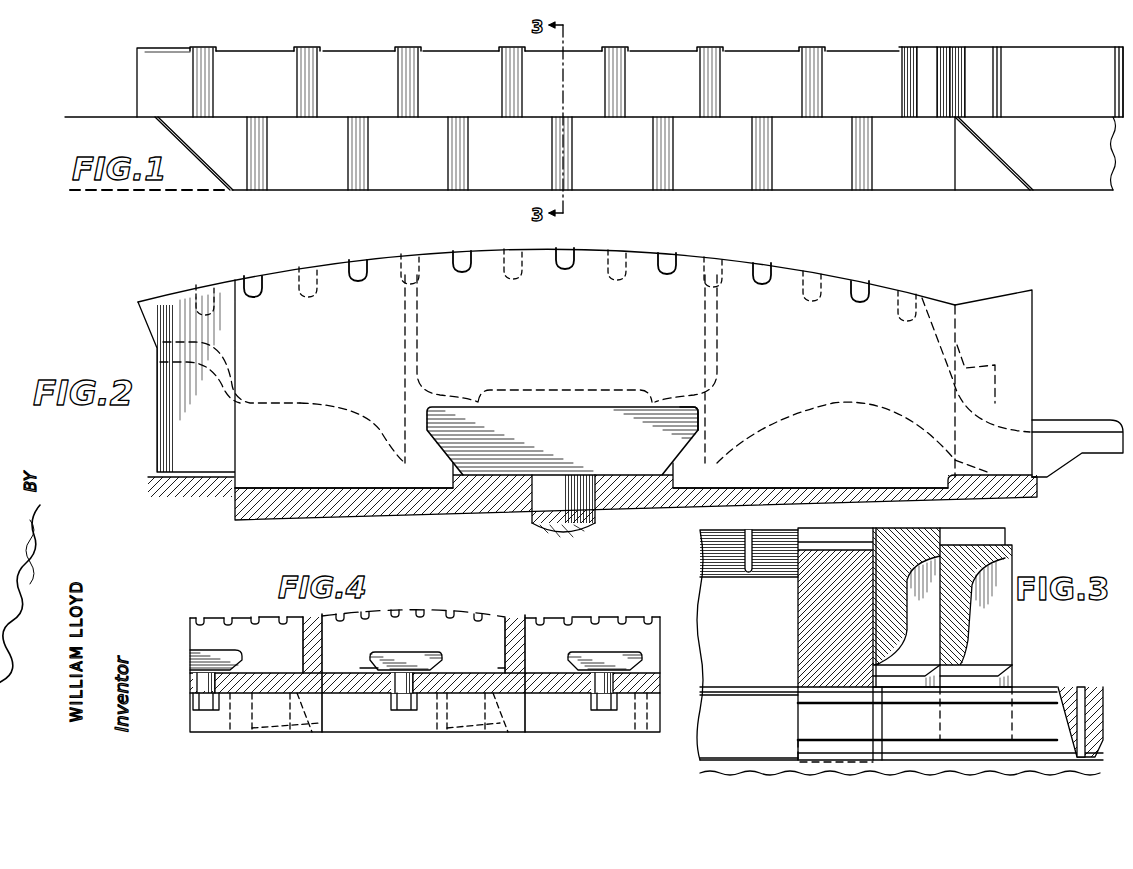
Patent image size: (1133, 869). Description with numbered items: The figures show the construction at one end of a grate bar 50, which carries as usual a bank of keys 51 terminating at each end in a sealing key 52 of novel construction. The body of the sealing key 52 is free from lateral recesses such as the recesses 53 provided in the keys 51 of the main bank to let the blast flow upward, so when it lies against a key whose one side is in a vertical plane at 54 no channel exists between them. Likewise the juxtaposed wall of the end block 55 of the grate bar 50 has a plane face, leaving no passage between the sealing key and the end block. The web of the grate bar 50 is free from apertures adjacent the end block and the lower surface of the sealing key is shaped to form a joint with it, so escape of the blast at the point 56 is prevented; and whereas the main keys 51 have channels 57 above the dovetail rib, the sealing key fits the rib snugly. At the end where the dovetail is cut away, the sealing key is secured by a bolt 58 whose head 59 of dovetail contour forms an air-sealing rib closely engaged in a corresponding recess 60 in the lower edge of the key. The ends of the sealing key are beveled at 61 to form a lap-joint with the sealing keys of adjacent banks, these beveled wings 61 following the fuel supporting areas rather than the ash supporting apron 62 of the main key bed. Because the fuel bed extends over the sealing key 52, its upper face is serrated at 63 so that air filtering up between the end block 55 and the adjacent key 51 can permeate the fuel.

In FIG. 2, the grate bar 50 is at (650, 507).
In FIG. 3, the grate bar 50 is at (1086, 763).
In FIG. 1, the keys 51 is at (742, 58).
In FIG. 3, the keys 51 is at (962, 537).
In FIG. 1, the sealing key 52 is at (790, 185).
In FIG. 2, the sealing key 52 is at (643, 373).
In FIG. 3, the sealing key 52 is at (837, 607).
In FIG. 4, the sealing key 52 is at (425, 671).
In FIG. 3, the lateral recesses 53 is at (1001, 638).
In FIG. 3, the vertical plane side 54 is at (868, 562).
In FIG. 3, the end block 55 is at (747, 645).
In FIG. 2, the joint point 56 is at (332, 490).
In FIG. 3, the joint point 56 is at (806, 753).
In FIG. 4, the joint point 56 is at (425, 683).
In FIG. 3, the channels 57 is at (938, 671).
In FIG. 2, the bolt 58 is at (547, 527).
In FIG. 4, the bolt 58 is at (403, 688).
In FIG. 2, the head 59 is at (562, 441).
In FIG. 3, the head 59 is at (834, 724).
In FIG. 4, the head 59 is at (444, 662).
In FIG. 2, the recess 60 is at (699, 410).
In FIG. 4, the recess 60 is at (240, 668).
In FIG. 1, the beveled wings 61 is at (199, 154).
In FIG. 2, the beveled wings 61 is at (1048, 327).
In FIG. 2, the ash supporting apron 62 is at (1106, 420).
In FIG. 1, the serrations 63 is at (762, 150).
In FIG. 2, the serrations 63 is at (362, 264).
In FIG. 4, the serrations 63 is at (482, 619).